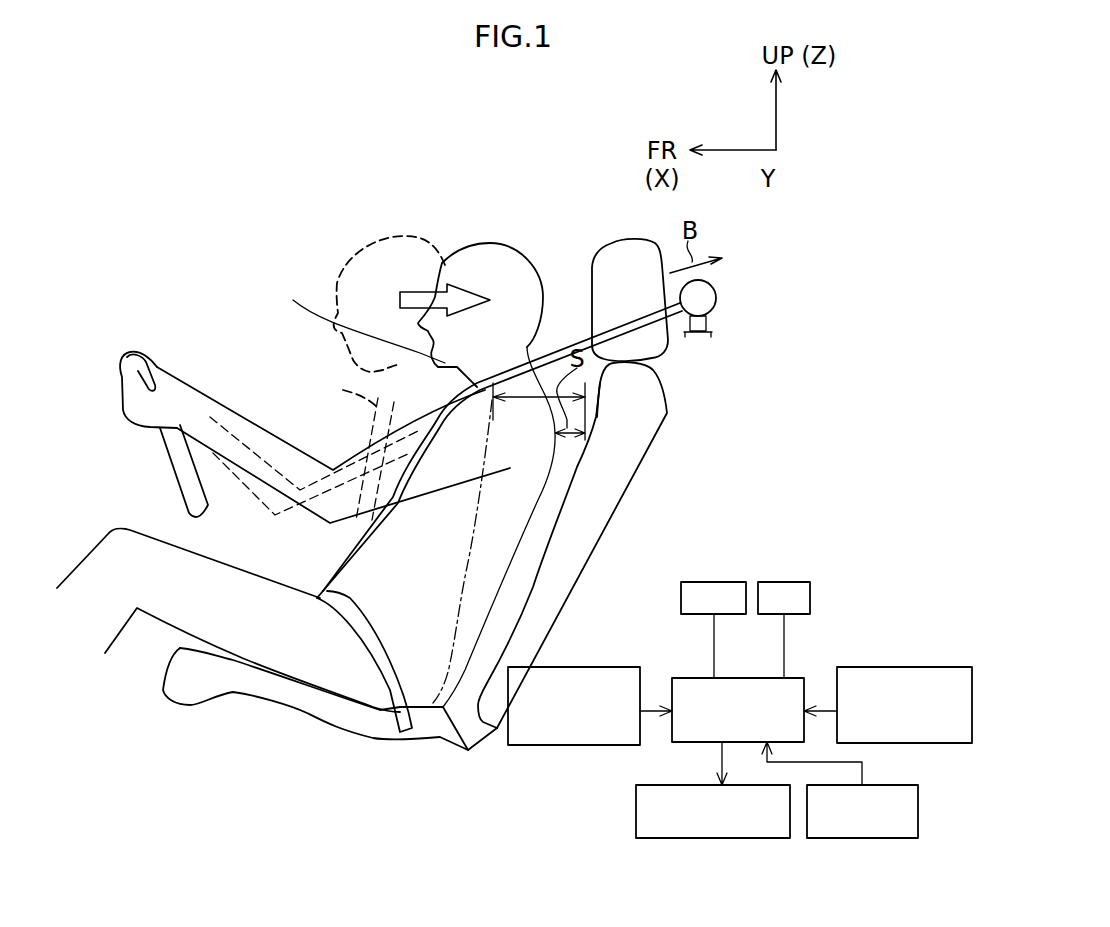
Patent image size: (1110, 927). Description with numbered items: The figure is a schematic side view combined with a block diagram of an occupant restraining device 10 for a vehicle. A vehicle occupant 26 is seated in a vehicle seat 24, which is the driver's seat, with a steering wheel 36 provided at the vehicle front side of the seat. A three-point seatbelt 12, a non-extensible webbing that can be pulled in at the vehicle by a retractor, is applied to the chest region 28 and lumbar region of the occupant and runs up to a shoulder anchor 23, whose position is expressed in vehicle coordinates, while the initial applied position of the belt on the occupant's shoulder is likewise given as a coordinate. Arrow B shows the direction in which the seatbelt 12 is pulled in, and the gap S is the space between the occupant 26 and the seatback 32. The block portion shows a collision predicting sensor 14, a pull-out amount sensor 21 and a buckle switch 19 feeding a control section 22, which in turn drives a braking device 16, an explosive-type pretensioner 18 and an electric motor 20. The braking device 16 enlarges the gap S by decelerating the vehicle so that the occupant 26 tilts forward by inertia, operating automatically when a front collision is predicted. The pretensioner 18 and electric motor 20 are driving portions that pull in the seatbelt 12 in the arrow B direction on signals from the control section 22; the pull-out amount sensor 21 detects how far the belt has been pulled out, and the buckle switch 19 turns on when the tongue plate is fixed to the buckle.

The occupant restraining device 10 is at (208, 183).
The seatbelt 12 is at (573, 340).
The collision predicting sensor 14 is at (548, 745).
The braking device 16 is at (711, 838).
The explosive-type pretensioner 18 is at (716, 582).
The buckle switch 19 is at (862, 838).
The electric motor 20 is at (780, 582).
The pull-out amount sensor 21 is at (875, 667).
The control section 22 is at (748, 678).
The shoulder anchor 23 is at (710, 295).
The vehicle seat 24 is at (555, 623).
The vehicle occupant 26 is at (487, 240).
The chest region 28 is at (393, 383).
The seatback 32 is at (582, 462).
The steering wheel 36 is at (167, 467).